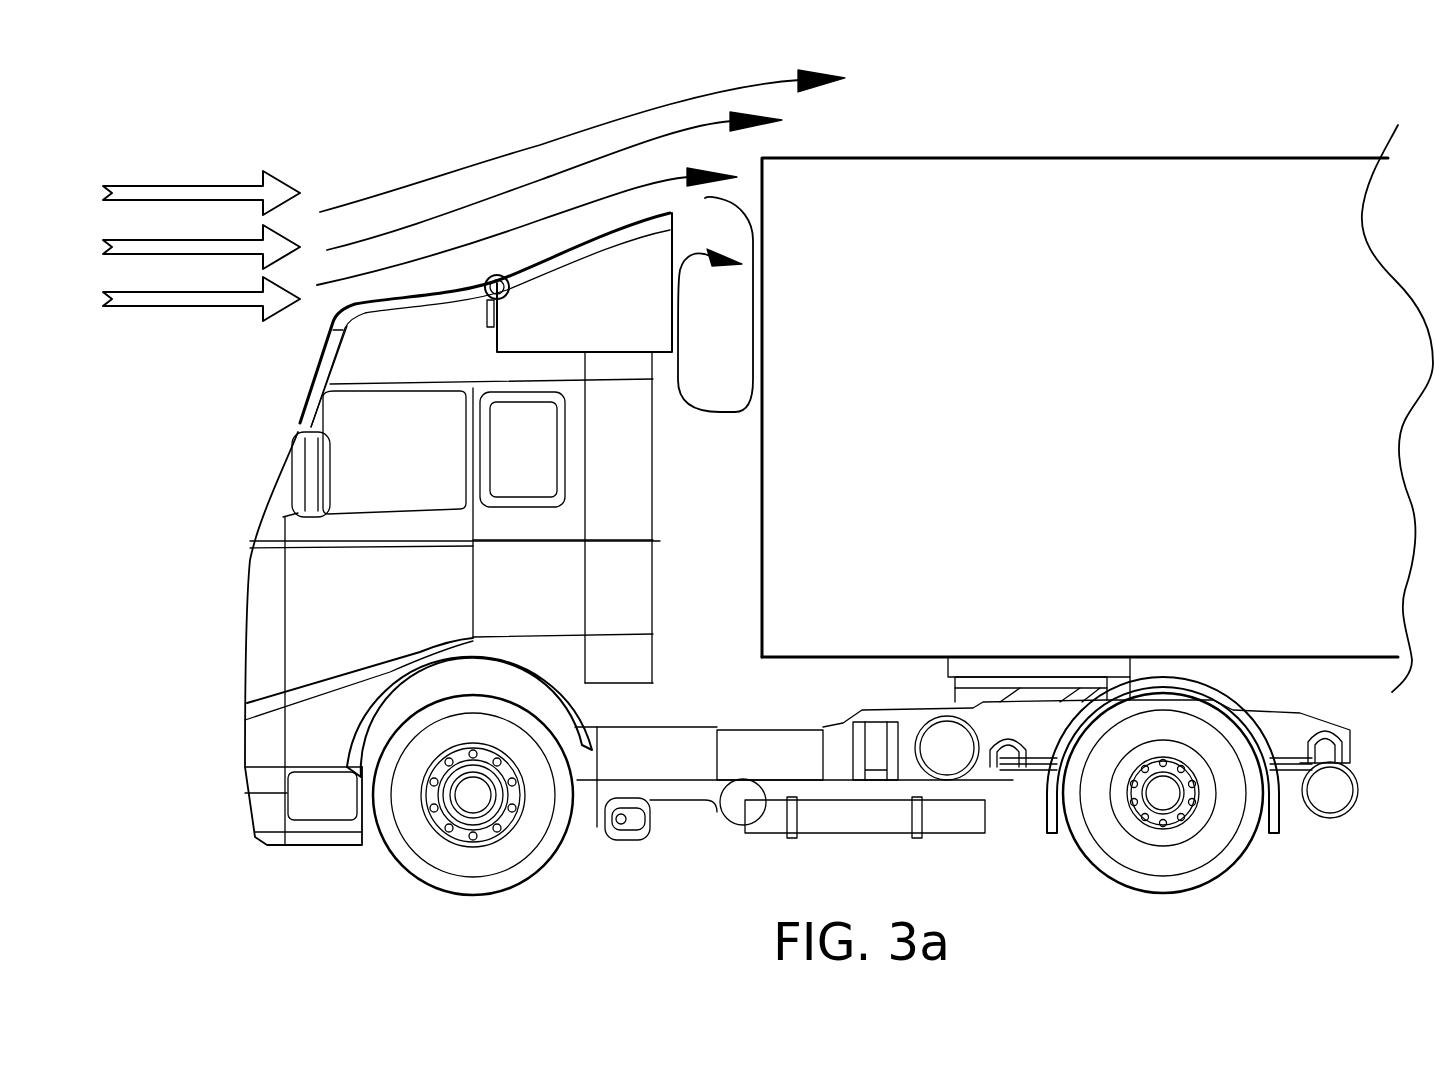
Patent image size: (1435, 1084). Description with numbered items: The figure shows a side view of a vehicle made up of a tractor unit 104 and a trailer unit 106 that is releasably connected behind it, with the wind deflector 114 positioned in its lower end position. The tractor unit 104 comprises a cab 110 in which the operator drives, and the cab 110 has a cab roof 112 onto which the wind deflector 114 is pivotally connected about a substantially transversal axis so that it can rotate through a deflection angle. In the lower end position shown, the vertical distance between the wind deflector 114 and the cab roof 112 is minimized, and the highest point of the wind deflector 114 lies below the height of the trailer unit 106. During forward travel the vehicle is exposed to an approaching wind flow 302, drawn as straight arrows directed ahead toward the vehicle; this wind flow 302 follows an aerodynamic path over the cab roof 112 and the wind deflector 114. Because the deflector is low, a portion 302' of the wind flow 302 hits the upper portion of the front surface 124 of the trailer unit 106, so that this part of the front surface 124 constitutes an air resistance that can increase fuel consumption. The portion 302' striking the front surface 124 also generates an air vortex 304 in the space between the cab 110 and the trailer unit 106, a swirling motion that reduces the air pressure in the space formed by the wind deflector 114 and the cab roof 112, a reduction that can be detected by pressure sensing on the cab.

The tractor unit 104 is at (210, 587).
The trailer unit 106 is at (1080, 125).
The cab 110 is at (267, 642).
The cab roof 112 is at (478, 308).
The wind deflector 114 is at (590, 307).
The front surface 124 is at (757, 166).
The wind flow 302 is at (200, 246).
The portion of the wind flow 302' is at (581, 167).
The air vortex 304 is at (747, 217).